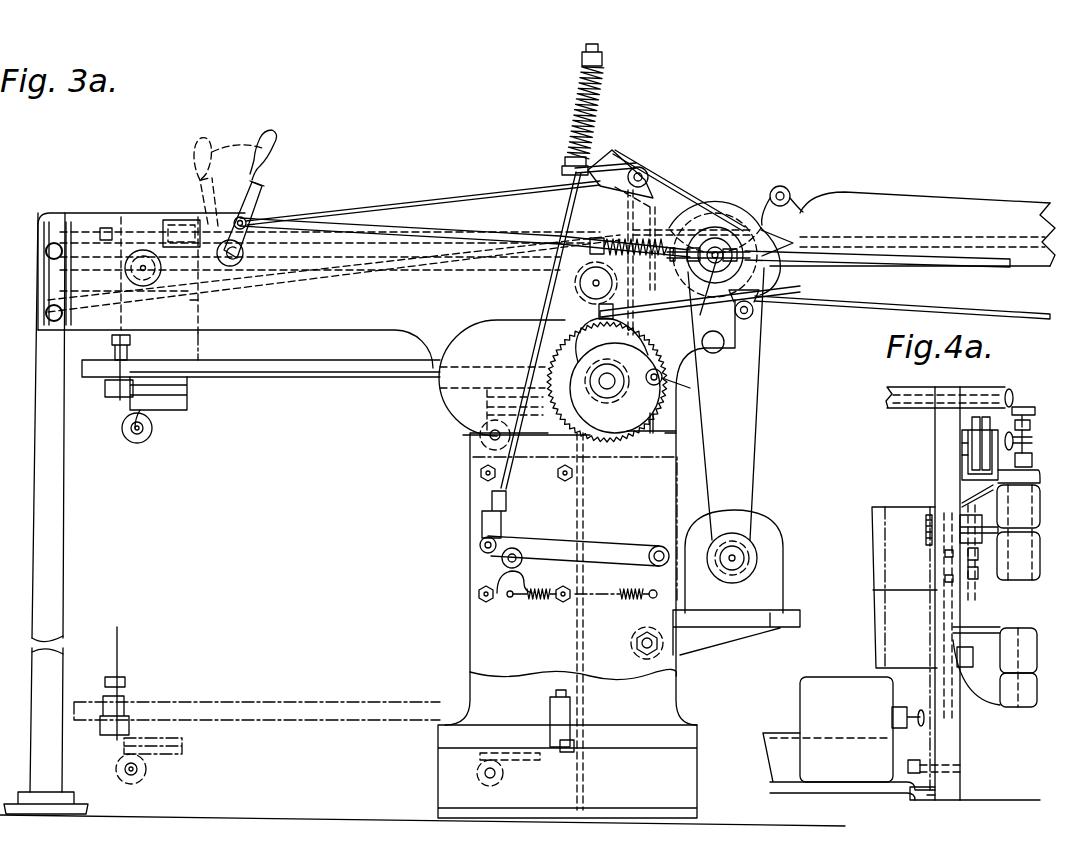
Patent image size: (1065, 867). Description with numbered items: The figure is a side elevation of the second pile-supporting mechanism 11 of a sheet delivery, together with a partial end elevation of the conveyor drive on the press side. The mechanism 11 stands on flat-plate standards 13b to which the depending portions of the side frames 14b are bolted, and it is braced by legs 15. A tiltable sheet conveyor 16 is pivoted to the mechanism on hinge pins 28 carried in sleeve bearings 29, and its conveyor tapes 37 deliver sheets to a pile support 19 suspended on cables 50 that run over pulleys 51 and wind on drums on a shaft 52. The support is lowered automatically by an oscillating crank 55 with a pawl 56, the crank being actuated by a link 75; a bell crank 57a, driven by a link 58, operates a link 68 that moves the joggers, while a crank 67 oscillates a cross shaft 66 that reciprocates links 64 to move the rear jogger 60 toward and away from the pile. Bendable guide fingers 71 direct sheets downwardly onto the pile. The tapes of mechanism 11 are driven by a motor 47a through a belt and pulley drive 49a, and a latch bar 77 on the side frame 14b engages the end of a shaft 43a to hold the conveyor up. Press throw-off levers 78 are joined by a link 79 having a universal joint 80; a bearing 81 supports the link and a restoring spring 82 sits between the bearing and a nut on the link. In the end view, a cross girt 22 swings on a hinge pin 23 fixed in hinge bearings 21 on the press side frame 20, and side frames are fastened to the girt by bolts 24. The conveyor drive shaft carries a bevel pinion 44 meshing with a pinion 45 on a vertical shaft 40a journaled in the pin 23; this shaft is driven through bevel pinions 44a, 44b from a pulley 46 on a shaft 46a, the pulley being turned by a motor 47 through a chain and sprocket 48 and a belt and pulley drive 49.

In FIG. 3A, the pile-supporting mechanism 11 is at (457, 425).
In FIG. 3A, the supporting standard 13b is at (462, 631).
In FIG. 3A, the side frame 14b is at (278, 330).
In FIG. 3A, the bracing leg 15 is at (58, 548).
In FIG. 3A, the tiltable sheet conveyor 16 is at (990, 195).
In FIG. 3A, the pile support 19 is at (328, 388).
In FIG. 4A, the side frame of the press 20 is at (945, 745).
In FIG. 4A, the hinge bearing 21 is at (1010, 560).
In FIG. 4A, the cross girt 22 is at (895, 591).
In FIG. 4A, the hinge pin 23 is at (1022, 598).
In FIG. 3A, the bolt 24 is at (480, 473).
In FIG. 4A, the hinge pin 28 is at (908, 380).
In FIG. 4A, the sleeve bearing 29 is at (950, 390).
In FIG. 3A, the conveyor tape 37 is at (912, 244).
In FIG. 4A, the shaft 40a is at (1036, 440).
In FIG. 3A, the shaft 43a is at (786, 305).
In FIG. 4A, the bevel pinion 44 is at (1013, 393).
In FIG. 4A, the bevel pinion 44a is at (1036, 460).
In FIG. 4A, the bevel pinion 44b is at (1034, 424).
In FIG. 4A, the bevel pinion 45 is at (1028, 407).
In FIG. 4A, the pulley 46 is at (935, 425).
In FIG. 4A, the shaft 46a is at (962, 452).
In FIG. 4A, the motor 47 is at (800, 700).
In FIG. 3A, the motor 47a is at (786, 562).
In FIG. 4A, the chain and sprocket 48 is at (928, 636).
In FIG. 4A, the belt and pulley drive 49 is at (962, 487).
In FIG. 3A, the belt and pulley drive 49a is at (755, 417).
In FIG. 3A, the cable 50 is at (428, 262).
In FIG. 3A, the pulley 51 is at (162, 271).
In FIG. 3A, the shaft 52 is at (690, 388).
In FIG. 3A, the oscillating crank 55 is at (634, 320).
In FIG. 3A, the pawl 56 is at (607, 378).
In FIG. 3A, the bell crank 57a is at (596, 557).
In FIG. 3A, the link 58 is at (663, 443).
In FIG. 3A, the rear jogger 60 is at (196, 312).
In FIG. 3A, the link 64 is at (126, 217).
In FIG. 3A, the cross shaft 66 is at (633, 165).
In FIG. 3A, the crank 67 is at (600, 160).
In FIG. 3A, the crank 68 is at (538, 282).
In FIG. 3A, the bendable guide finger 71 is at (474, 211).
In FIG. 3A, the link 75 is at (843, 305).
In FIG. 3A, the latch bar 77 is at (733, 207).
In FIG. 3A, the press throw-off lever 78 is at (277, 153).
In FIG. 3A, the link 79 is at (367, 226).
In FIG. 3A, the universal joint 80 is at (712, 207).
In FIG. 3A, the bearing 81 is at (593, 237).
In FIG. 3A, the restoring spring 82 is at (657, 187).